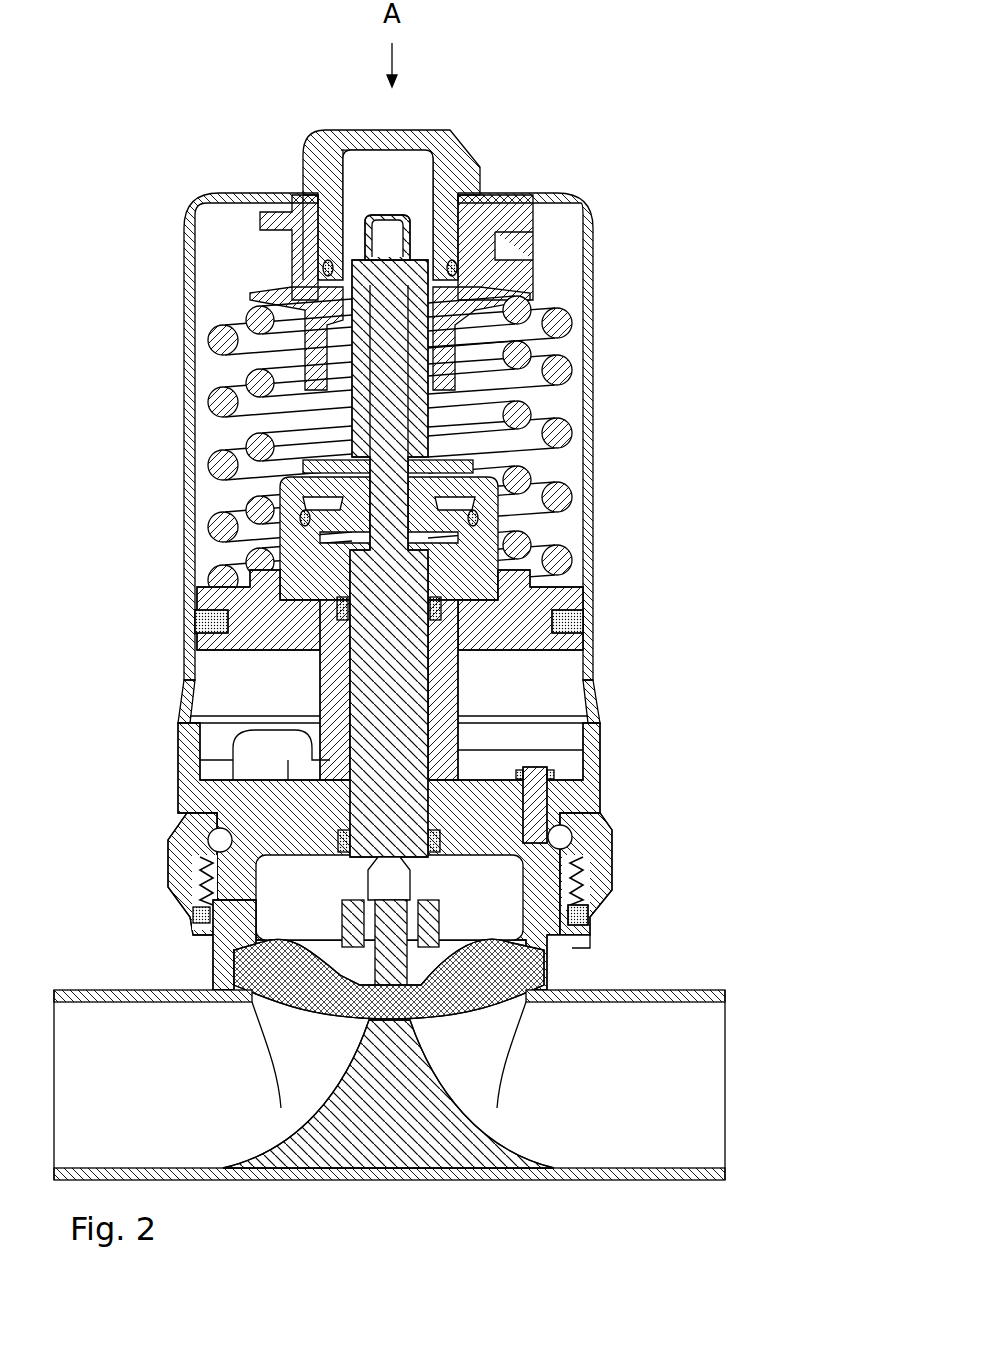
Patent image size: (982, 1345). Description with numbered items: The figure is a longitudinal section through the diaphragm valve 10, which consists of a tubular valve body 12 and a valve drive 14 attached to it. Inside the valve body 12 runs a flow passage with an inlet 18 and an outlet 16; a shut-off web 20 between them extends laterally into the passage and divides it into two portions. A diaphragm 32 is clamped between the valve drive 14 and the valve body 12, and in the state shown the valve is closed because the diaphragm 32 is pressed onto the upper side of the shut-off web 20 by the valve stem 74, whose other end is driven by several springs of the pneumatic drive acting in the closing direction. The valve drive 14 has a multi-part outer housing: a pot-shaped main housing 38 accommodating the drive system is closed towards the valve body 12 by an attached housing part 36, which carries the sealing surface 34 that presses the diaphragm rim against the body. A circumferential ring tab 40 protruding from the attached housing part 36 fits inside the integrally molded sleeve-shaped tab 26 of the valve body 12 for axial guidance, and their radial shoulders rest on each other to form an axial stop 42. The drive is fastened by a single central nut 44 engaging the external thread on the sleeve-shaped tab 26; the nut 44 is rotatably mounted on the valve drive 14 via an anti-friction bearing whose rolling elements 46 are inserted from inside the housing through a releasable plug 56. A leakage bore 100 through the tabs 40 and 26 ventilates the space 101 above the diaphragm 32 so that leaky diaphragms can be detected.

The diaphragm valve 10 is at (392, 585).
The valve body 12 is at (624, 986).
The valve drive 14 is at (606, 309).
The outlet 16 is at (690, 1100).
The inlet 18 is at (130, 1100).
The shut-off web 20 is at (388, 1155).
The sleeve-shaped tab 26 is at (573, 917).
The diaphragm 32 is at (234, 968).
The sealing surface 34 is at (548, 985).
The attached housing part 36 is at (595, 773).
The main housing 38 is at (593, 502).
The ring tab 40 is at (540, 893).
The axial stop 42 is at (213, 893).
The nut 44 is at (177, 840).
The rolling elements 46 is at (211, 832).
The releasable plug 56 is at (537, 780).
The valve stem 74 is at (365, 732).
The leakage bore 100 is at (565, 942).
The space above the diaphragm 101 is at (572, 843).